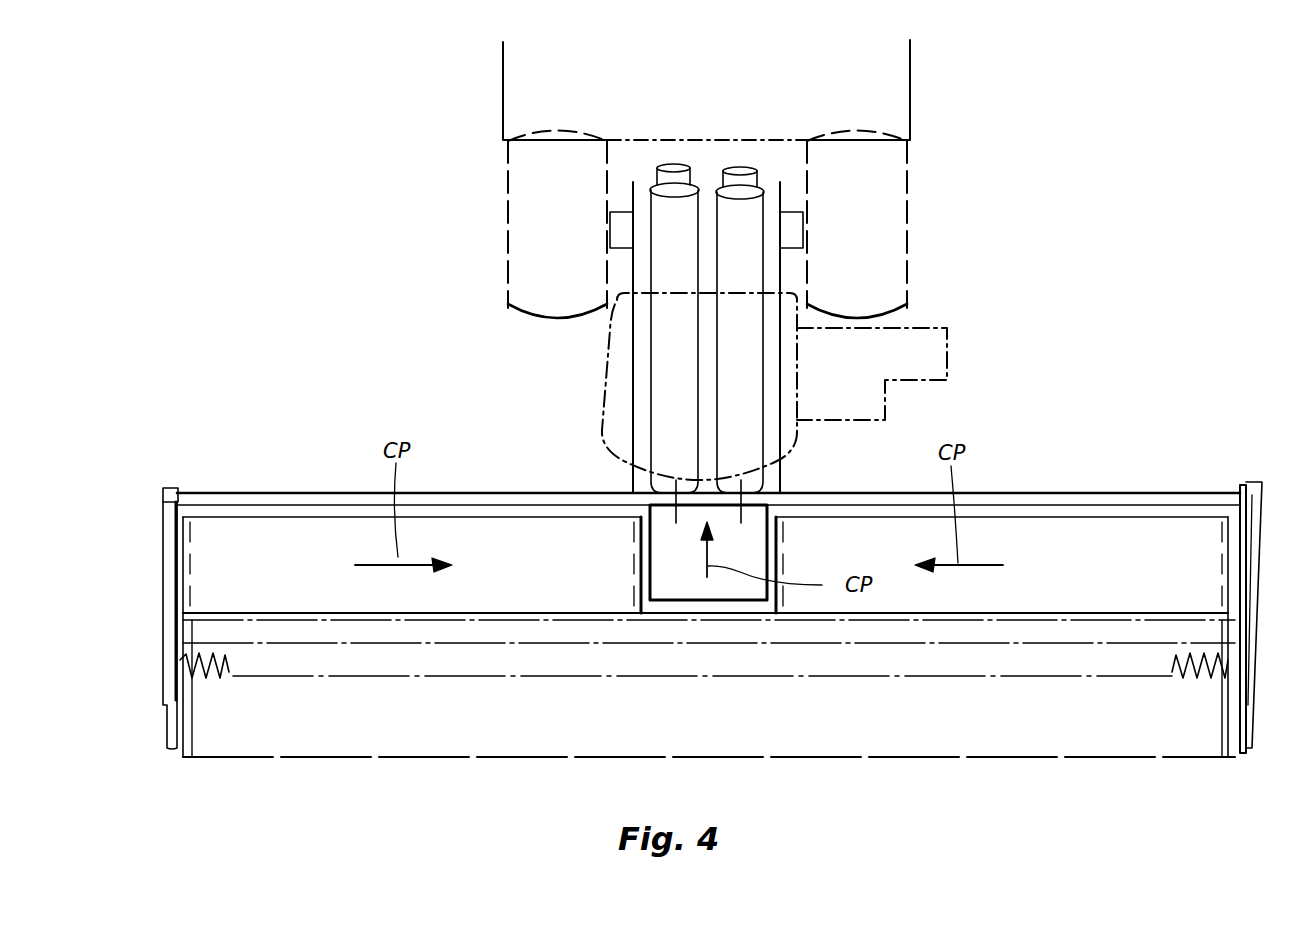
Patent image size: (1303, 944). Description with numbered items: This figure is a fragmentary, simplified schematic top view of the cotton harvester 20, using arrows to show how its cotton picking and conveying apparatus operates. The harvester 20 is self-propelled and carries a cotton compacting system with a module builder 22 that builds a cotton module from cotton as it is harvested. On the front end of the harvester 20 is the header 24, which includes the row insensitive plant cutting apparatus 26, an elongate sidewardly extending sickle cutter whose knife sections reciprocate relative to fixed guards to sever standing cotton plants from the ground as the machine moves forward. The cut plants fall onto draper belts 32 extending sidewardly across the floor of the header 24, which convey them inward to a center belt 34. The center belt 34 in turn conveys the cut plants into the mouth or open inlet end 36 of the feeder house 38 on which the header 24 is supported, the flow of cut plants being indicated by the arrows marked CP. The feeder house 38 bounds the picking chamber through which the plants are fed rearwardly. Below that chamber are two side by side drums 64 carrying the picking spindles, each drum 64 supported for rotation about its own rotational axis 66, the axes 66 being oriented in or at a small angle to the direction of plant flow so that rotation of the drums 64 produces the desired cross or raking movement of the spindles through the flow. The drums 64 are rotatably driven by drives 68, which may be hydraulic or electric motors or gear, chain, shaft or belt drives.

The cotton harvester 20 is at (1150, 120).
The module builder 22 is at (917, 92).
The header 24 is at (1201, 482).
The plant cutting apparatus 26 is at (214, 676).
The draper belts 32 is at (273, 540).
The center belt 34 is at (685, 578).
The inlet end 36 is at (727, 508).
The feeder house 38 is at (625, 470).
The drum 64 is at (633, 263).
The rotational axis 66 is at (738, 158).
The drive 68 is at (667, 163).